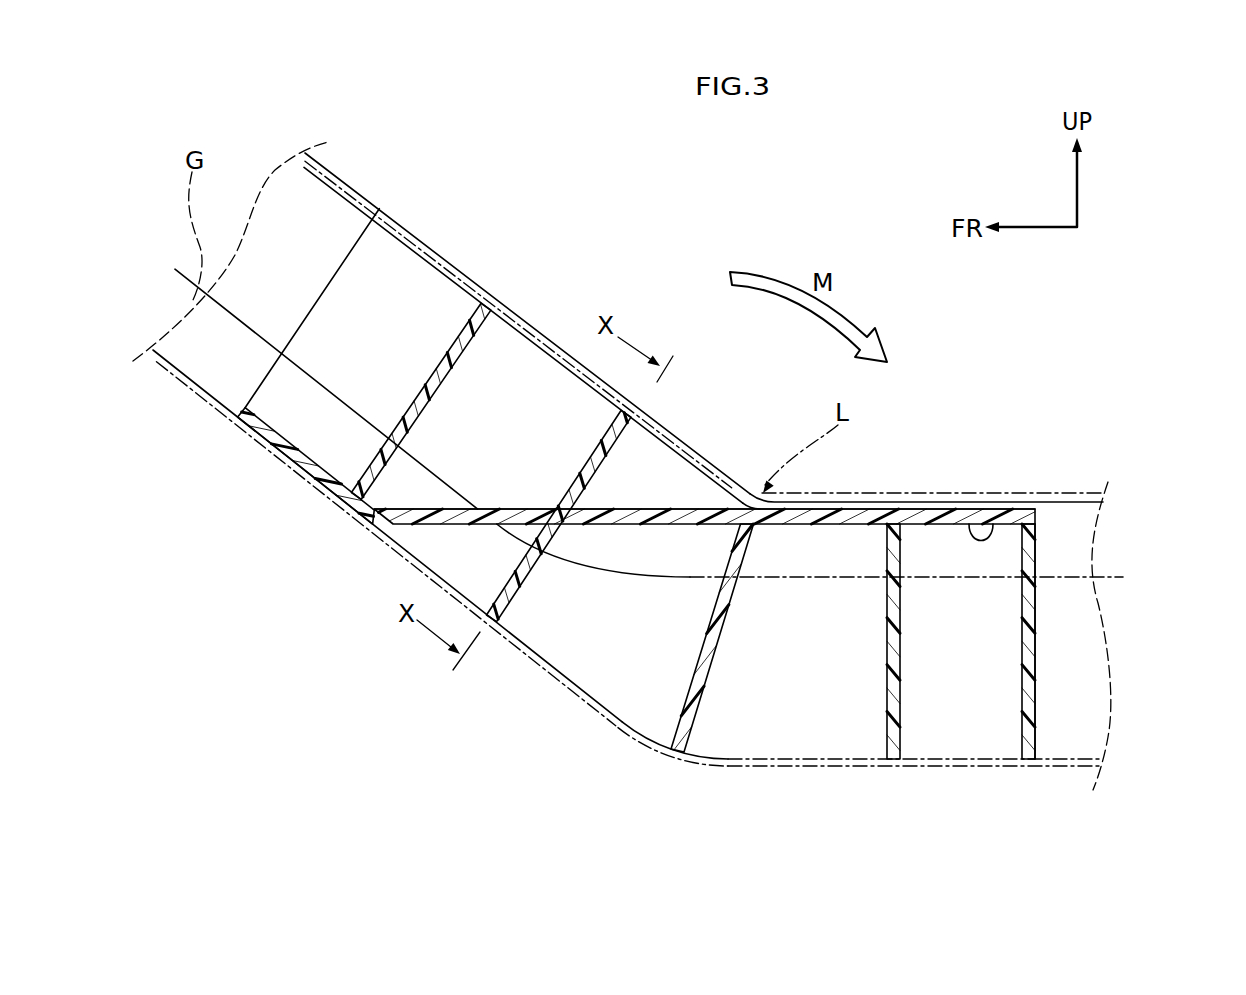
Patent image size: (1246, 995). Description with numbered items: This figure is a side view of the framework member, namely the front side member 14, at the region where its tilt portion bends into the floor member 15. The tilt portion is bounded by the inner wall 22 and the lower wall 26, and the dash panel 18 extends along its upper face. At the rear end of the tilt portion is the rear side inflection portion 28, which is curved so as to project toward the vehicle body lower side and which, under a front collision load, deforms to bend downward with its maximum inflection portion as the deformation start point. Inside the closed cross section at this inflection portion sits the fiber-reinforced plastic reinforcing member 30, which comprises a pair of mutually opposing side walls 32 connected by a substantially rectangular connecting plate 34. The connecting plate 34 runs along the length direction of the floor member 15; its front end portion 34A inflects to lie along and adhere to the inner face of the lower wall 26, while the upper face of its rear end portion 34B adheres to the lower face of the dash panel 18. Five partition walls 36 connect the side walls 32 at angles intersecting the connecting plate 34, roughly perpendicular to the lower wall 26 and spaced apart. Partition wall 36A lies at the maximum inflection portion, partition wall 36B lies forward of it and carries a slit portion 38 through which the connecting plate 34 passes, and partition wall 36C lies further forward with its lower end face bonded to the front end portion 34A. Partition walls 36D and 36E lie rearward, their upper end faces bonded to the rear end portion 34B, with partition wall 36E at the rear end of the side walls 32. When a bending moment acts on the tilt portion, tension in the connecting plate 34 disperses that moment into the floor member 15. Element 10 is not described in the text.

The vehicle body structure 10 is at (562, 733).
The front side member 14 is at (176, 372).
The floor member 15 is at (1044, 782).
The dash panel 18 is at (1013, 482).
The inner wall 22 is at (315, 221).
The lower wall 26 is at (303, 472).
The rear side inflection portion 28 is at (664, 763).
The reinforcing member 30 is at (1045, 558).
The side wall 32 is at (397, 254).
The connecting plate 34 is at (657, 500).
The front end portion 34A is at (290, 437).
The rear end portion 34B is at (980, 503).
The partition wall 36 is at (777, 531).
The partition wall 36A is at (714, 650).
The partition wall 36B is at (590, 458).
The partition wall 36C is at (430, 388).
The partition wall 36D is at (887, 730).
The partition wall 36E is at (1035, 668).
The slit portion 38 is at (567, 533).